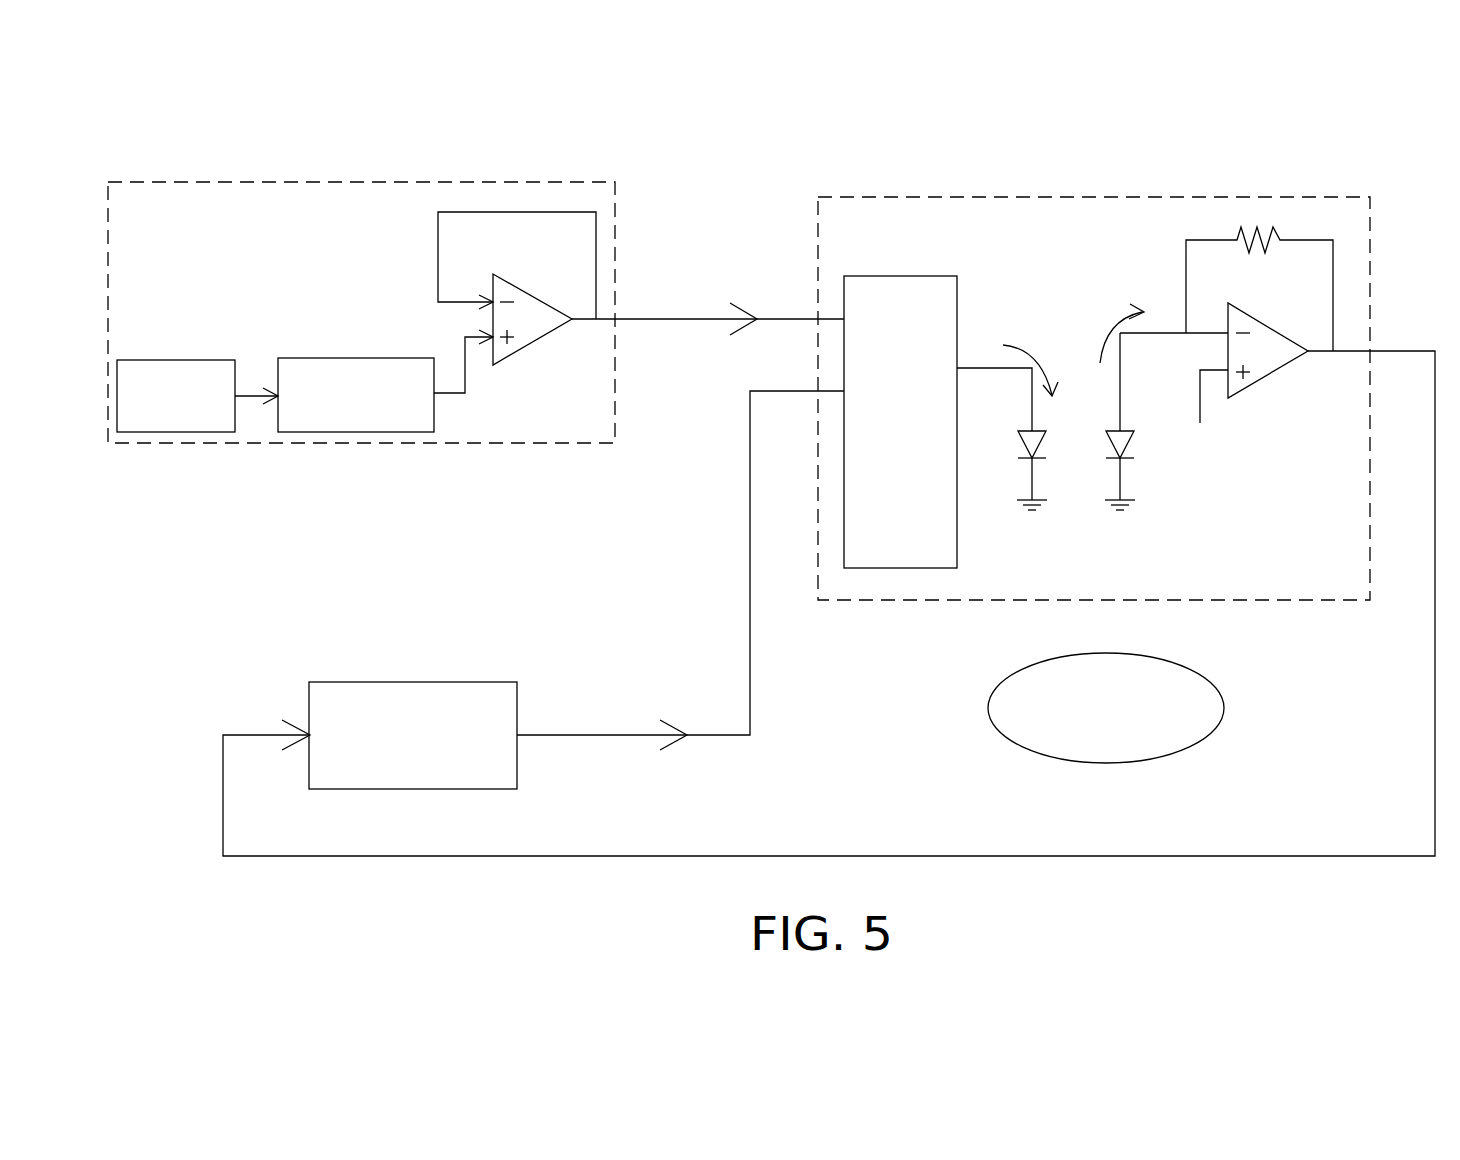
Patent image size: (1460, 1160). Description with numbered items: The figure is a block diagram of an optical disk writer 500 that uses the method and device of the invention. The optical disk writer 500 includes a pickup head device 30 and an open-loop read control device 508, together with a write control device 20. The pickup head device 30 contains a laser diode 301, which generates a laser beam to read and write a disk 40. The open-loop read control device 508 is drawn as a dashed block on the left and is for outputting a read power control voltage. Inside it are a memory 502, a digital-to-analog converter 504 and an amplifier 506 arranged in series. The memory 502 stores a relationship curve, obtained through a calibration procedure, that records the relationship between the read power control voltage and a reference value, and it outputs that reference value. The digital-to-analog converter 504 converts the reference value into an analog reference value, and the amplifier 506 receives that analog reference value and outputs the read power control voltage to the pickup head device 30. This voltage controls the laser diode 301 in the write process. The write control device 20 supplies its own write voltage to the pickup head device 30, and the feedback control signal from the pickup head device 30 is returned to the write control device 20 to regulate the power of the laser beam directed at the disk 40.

The optical disk writer 500 is at (1406, 137).
The open-loop read control device 508 is at (615, 200).
The memory 502 is at (176, 432).
The DAC (Digital to Analog Converter) 504 is at (358, 432).
The amplifier 506 is at (527, 300).
The pickup head device 30 is at (1098, 197).
The laser diode 301 is at (1026, 446).
The write control device 20 is at (407, 789).
The disk 40 is at (1224, 708).